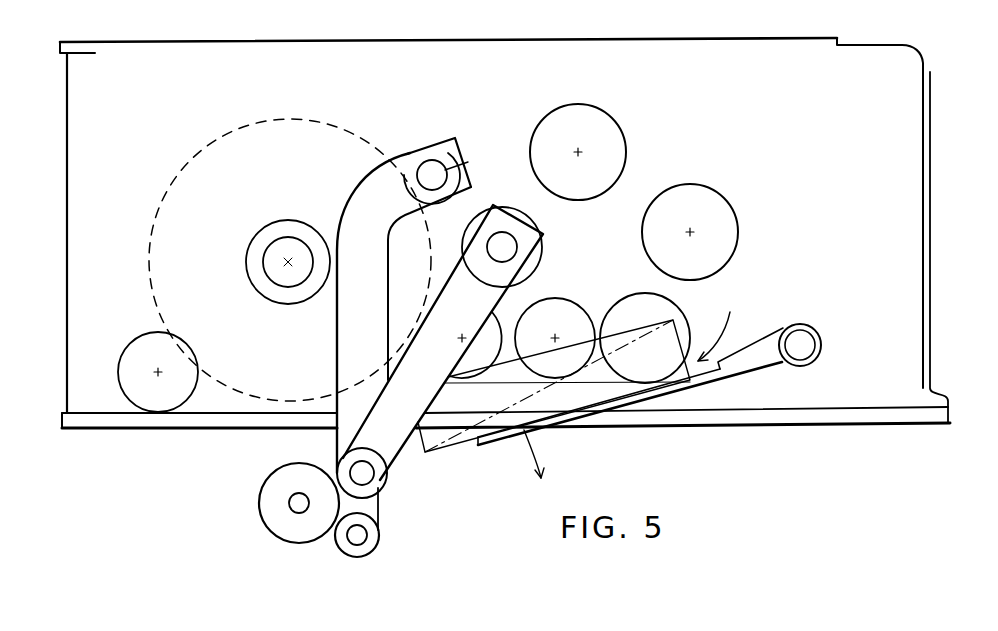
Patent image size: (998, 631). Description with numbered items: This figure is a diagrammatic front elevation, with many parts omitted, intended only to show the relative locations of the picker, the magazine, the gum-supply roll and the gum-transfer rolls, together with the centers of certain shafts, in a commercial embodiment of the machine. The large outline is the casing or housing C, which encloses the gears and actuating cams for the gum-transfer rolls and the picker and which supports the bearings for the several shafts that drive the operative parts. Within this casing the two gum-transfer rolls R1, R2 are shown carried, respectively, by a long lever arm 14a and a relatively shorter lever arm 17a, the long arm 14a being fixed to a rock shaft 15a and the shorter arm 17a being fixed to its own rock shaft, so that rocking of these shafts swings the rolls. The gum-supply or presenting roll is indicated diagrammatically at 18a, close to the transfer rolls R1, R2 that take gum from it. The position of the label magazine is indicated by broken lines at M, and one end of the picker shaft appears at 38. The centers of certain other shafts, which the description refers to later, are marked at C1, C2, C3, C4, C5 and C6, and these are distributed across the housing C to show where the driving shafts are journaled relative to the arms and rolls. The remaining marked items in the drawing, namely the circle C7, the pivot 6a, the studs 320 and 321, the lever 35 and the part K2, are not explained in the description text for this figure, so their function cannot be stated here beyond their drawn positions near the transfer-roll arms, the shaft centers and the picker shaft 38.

The casing or housing C is at (918, 160).
The shaft center C1 is at (157, 371).
The shaft center C2 is at (557, 337).
The shaft center C3 is at (462, 336).
The shaft center C4 is at (691, 230).
The shaft center C5 is at (288, 260).
The shaft center C6 is at (580, 152).
The roller C7 is at (653, 331).
The long lever arm 14a is at (347, 345).
The rock shaft 15a is at (428, 164).
The pivot 6a is at (506, 233).
The shorter lever arm 17a is at (554, 360).
The roller stud 320 is at (346, 465).
The roller stud 321 is at (355, 548).
The gum-transfer roll R1 is at (379, 540).
The gum-transfer roll R2 is at (387, 480).
The gum-supply or presenting roll 18a is at (300, 530).
The lever 35 is at (768, 350).
The picker shaft 38 is at (812, 339).
The key K2 is at (716, 374).
The label magazine M is at (716, 327).